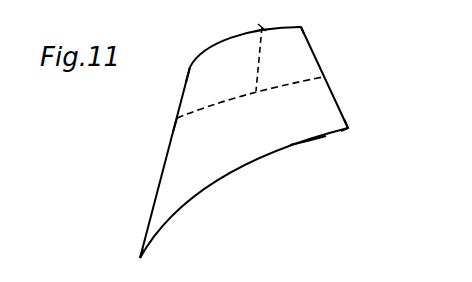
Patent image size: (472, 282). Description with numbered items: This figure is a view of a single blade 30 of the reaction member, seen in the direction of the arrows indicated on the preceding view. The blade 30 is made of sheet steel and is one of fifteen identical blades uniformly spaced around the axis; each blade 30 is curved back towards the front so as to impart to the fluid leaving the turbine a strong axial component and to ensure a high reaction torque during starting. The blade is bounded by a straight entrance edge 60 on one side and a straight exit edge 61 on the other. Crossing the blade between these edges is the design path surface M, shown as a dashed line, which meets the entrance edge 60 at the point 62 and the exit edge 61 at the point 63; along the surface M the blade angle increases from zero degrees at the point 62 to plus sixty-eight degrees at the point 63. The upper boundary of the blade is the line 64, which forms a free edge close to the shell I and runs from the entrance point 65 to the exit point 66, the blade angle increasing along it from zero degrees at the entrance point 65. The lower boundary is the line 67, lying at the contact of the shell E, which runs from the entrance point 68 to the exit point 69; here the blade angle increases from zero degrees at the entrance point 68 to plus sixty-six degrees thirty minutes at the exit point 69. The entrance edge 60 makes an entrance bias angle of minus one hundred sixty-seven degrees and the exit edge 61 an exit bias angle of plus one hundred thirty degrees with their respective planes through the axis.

The blade 30 is at (308, 143).
The entrance edge 60 is at (338, 100).
The exit edge 61 is at (157, 189).
The point 62 is at (324, 73).
The point 63 is at (173, 130).
The line 64 is at (217, 40).
The entrance point 65 is at (301, 27).
The exit point 66 is at (190, 66).
The line 67 is at (248, 164).
The entrance point 68 is at (348, 128).
The exit point 69 is at (140, 258).
The design path surface M is at (264, 47).